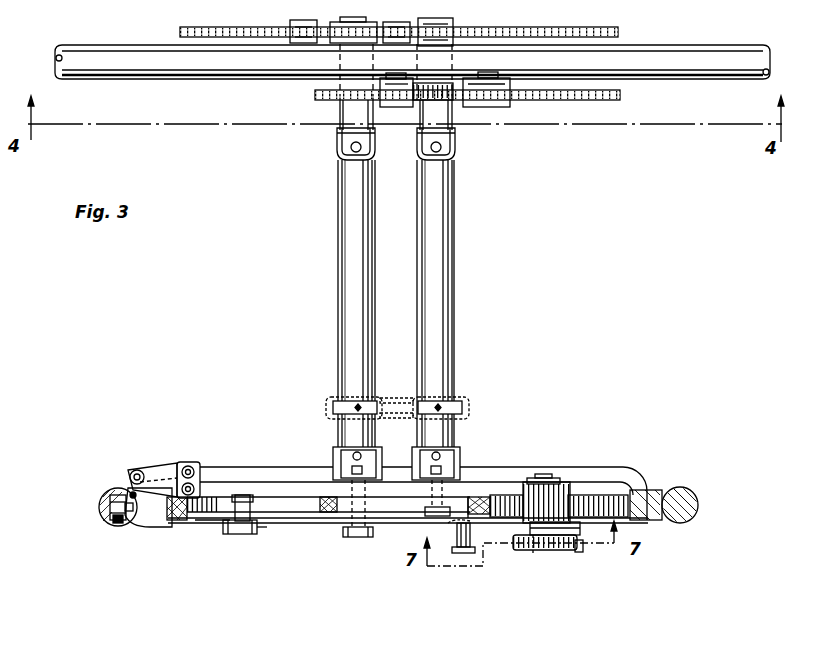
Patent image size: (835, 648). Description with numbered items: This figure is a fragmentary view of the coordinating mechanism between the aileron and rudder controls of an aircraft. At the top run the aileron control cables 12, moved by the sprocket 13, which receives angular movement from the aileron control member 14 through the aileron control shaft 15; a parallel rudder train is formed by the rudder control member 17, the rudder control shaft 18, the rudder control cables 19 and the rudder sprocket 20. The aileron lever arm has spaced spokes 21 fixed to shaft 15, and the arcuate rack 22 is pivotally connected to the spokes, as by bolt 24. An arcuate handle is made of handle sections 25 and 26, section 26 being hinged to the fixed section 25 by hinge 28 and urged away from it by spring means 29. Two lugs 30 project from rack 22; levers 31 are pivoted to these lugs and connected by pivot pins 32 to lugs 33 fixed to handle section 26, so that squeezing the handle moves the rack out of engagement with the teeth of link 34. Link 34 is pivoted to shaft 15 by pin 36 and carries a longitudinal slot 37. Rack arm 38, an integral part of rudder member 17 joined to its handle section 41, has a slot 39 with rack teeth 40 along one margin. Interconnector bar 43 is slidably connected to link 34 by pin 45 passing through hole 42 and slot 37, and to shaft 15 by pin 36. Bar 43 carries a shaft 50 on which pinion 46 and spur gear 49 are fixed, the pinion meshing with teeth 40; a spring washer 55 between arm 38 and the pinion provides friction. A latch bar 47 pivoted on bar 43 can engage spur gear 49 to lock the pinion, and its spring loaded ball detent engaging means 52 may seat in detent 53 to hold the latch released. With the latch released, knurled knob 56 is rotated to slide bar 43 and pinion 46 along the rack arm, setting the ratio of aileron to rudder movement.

The aileron control cables 12 is at (231, 30).
The sprocket 13 is at (358, 22).
The aileron control member 14 is at (240, 552).
The aileron control shaft 15 is at (356, 284).
The rudder control member 17 is at (565, 567).
The rudder control shaft 18 is at (443, 297).
The rudder control cables 19 is at (482, 94).
The rudder sprocket 20 is at (447, 101).
The spokes 21 is at (262, 470).
The arcuate rack 22 is at (165, 520).
The bolt 24 is at (196, 467).
The handle section 25 is at (108, 520).
The handle section 26 is at (107, 490).
The hinge 28 is at (130, 527).
The spring means 29 is at (106, 503).
The lugs 30 is at (188, 463).
The levers 31 is at (163, 470).
The pivot pins 32 is at (134, 471).
The lugs 33 is at (130, 492).
The link 34 is at (195, 521).
The pin 36 is at (357, 535).
The slot 37 is at (217, 509).
The rack arm 38 is at (488, 498).
The slot 39 is at (495, 500).
The rack teeth 40 is at (596, 502).
The handle section 41 is at (694, 498).
The hole 42 is at (267, 528).
The interconnector bar 43 is at (398, 523).
The pin 45 is at (250, 528).
The pinion 46 is at (552, 490).
The latch bar 47 is at (507, 534).
The spur gear 49 is at (578, 551).
The shaft 50 is at (533, 553).
The spring loaded ball detent engaging means 52 is at (458, 551).
The detent 53 is at (445, 523).
The spring washer 55 is at (530, 487).
The knurled knob 56 is at (542, 553).